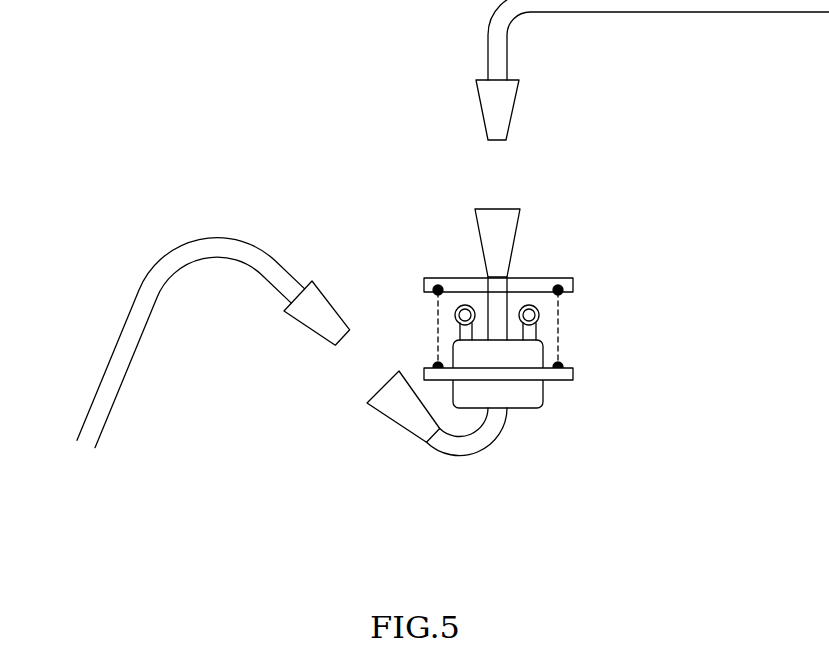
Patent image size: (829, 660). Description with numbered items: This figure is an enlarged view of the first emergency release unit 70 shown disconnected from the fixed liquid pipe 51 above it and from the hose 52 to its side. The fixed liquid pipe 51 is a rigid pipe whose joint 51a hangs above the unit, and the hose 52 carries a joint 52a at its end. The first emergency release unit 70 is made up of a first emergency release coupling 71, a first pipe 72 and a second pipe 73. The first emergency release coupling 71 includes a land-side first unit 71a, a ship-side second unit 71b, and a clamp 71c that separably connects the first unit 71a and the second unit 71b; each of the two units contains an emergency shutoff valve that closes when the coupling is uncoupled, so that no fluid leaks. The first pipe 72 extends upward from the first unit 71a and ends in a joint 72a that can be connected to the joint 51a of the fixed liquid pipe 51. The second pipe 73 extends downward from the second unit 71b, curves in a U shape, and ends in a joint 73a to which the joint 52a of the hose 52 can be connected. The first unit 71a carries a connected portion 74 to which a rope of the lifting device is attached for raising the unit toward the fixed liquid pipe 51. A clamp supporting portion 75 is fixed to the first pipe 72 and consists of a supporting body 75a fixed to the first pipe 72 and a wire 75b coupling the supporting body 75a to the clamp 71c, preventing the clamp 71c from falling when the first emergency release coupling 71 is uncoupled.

The fixed liquid pipe 51 is at (643, 12).
The joint 51a is at (513, 118).
The hose 52 is at (158, 293).
The joint 52a is at (303, 323).
The first emergency release unit 70 is at (537, 384).
The first emergency release coupling 71 is at (565, 402).
The first unit 71a is at (544, 350).
The second unit 71b is at (538, 405).
The clamp 71c is at (548, 395).
The first pipe 72 is at (507, 303).
The joint 72a is at (520, 222).
The second pipe 73 is at (485, 448).
The joint 73a is at (392, 422).
The connected portion 74 is at (455, 313).
The clamp supporting portion 75 is at (510, 292).
The supporting body 75a is at (460, 285).
The wire 75b is at (438, 338).